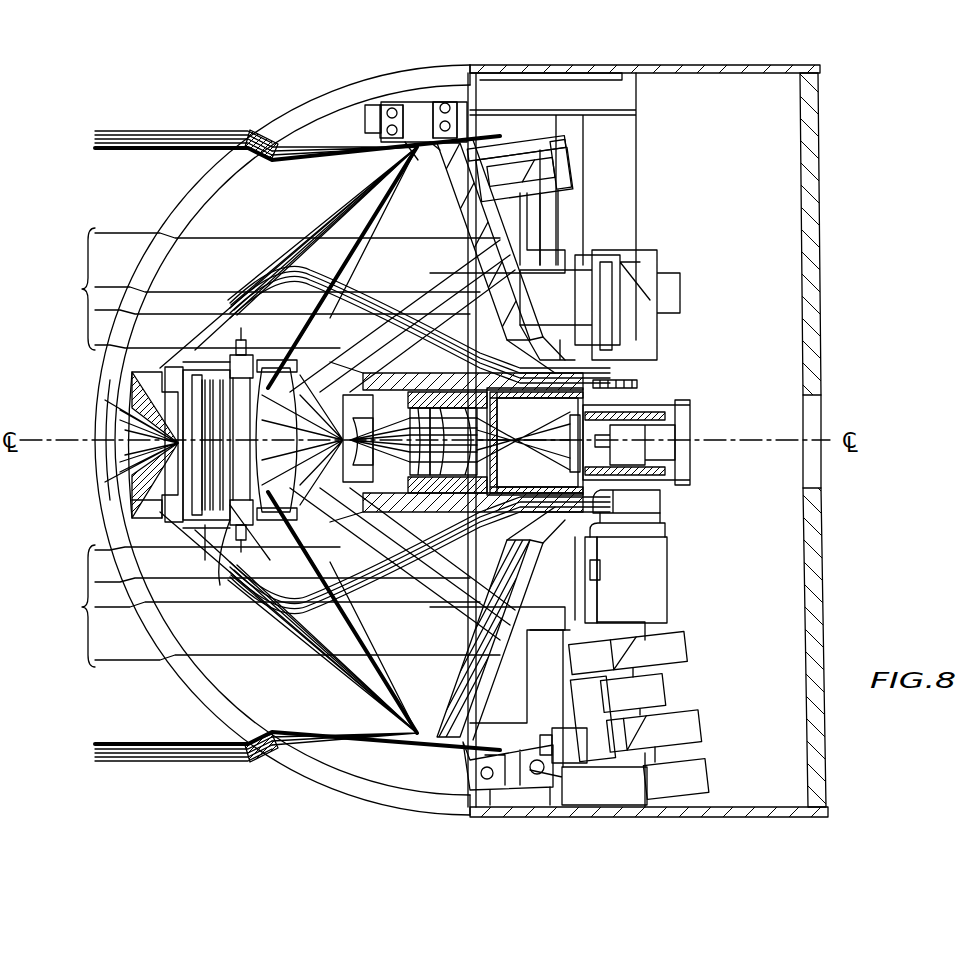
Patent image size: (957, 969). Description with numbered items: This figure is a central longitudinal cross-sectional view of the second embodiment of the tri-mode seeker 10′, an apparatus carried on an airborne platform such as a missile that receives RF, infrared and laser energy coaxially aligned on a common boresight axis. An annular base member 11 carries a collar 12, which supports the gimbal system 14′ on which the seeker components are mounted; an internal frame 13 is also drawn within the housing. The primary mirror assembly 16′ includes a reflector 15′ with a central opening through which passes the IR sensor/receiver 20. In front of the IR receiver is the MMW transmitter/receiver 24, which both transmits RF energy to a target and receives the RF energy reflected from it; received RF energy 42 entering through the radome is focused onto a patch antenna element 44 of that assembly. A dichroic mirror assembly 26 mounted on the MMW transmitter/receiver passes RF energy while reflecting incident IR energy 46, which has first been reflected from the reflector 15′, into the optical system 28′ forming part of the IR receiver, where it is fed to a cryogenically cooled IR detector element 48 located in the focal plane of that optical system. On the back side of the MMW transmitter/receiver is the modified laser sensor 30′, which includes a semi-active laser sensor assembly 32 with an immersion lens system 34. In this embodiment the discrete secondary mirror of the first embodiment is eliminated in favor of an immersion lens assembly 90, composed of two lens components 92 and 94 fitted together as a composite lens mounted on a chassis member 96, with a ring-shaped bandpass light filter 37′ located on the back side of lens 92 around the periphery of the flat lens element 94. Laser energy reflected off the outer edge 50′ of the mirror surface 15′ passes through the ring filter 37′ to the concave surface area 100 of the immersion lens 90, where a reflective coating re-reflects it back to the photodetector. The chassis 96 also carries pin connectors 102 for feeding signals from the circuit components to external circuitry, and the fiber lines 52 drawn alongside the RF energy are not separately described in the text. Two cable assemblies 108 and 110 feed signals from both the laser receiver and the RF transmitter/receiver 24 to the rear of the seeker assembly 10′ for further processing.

The seeker 10′ is at (278, 100).
The annular base member 11 is at (740, 63).
The collar 12 is at (540, 66).
The internal frame 13 is at (630, 137).
The gimbal system 14′ is at (372, 108).
The reflector 15′ is at (410, 157).
The primary mirror assembly 16′ is at (500, 235).
The IR sensor/receiver 20 is at (430, 496).
The MMW transmitter/receiver 24 is at (275, 545).
The dichroic mirror assembly 26 is at (310, 365).
The optical system 28′ is at (515, 335).
The laser sensor 30′ is at (128, 420).
The semi-active laser sensor assembly 32 is at (167, 358).
The immersion lens system 34 is at (160, 390).
The bandpass light filter 37′ is at (105, 382).
The received RF energy 42 is at (127, 151).
The patch antenna element 44 is at (280, 355).
The incident IR energy 46 is at (548, 580).
The IR detector element 48 is at (625, 405).
The outer edge of mirror surface 50′ is at (420, 135).
The optical fibers 52 is at (145, 132).
The immersion lens assembly 90 is at (145, 470).
The lens component 92 is at (140, 434).
The flat lens element 94 is at (132, 492).
The chassis member 96 is at (205, 528).
The concave surface area 100 is at (132, 400).
The pin connectors 102 is at (205, 565).
The cable assembly 108 is at (350, 262).
The cable assembly 110 is at (348, 636).